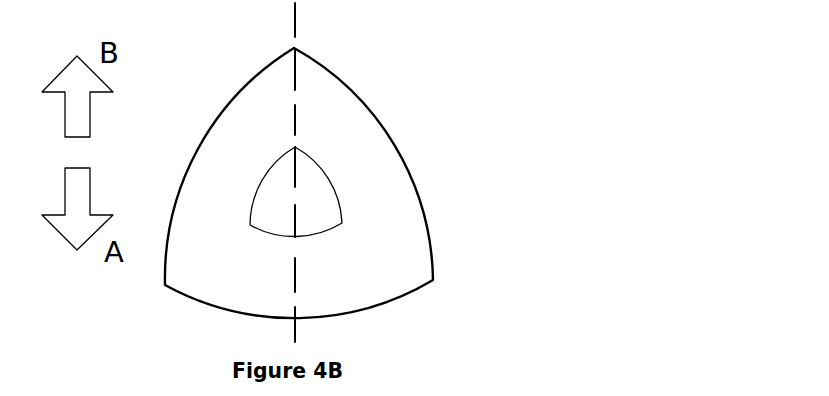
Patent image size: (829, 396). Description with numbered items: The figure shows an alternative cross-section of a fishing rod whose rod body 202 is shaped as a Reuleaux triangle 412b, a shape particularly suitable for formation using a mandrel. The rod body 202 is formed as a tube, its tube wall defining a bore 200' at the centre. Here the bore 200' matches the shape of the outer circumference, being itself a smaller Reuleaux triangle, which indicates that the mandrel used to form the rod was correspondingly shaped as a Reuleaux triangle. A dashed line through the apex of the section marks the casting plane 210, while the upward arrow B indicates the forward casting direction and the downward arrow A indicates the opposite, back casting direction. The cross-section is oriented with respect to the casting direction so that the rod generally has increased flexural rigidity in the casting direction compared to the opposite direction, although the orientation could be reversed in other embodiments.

The body of the rod 202 is at (400, 270).
The bore 200' is at (359, 189).
The casting plane 210 is at (304, 128).
The Reuleaux triangle 412b is at (378, 172).